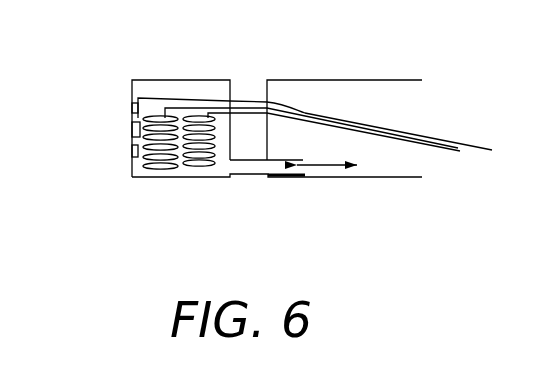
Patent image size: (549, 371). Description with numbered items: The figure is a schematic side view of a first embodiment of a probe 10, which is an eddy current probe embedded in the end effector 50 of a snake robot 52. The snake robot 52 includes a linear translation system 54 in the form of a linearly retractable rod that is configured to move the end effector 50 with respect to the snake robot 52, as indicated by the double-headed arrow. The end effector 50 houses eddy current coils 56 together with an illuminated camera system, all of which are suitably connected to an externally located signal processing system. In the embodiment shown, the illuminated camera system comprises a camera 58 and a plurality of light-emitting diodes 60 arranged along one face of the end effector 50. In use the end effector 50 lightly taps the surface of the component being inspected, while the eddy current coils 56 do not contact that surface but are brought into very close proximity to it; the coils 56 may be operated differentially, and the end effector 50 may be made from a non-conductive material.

The probe 10 is at (115, 65).
The end effector 50 is at (184, 80).
The snake robot 52 is at (318, 80).
The linear translation system 54 is at (275, 174).
The eddy current coils 56 is at (202, 178).
The camera 58 is at (124, 124).
The light-emitting diodes 60 is at (124, 105).